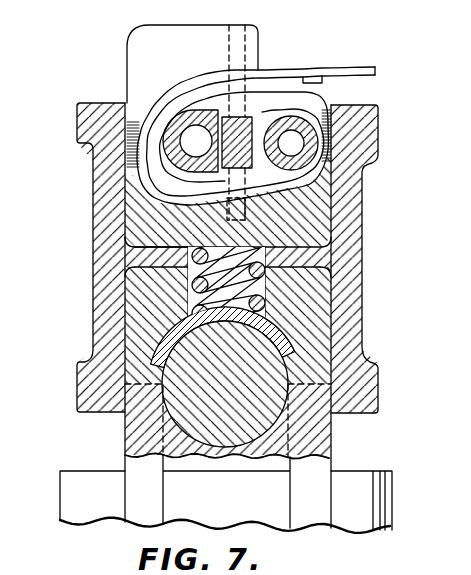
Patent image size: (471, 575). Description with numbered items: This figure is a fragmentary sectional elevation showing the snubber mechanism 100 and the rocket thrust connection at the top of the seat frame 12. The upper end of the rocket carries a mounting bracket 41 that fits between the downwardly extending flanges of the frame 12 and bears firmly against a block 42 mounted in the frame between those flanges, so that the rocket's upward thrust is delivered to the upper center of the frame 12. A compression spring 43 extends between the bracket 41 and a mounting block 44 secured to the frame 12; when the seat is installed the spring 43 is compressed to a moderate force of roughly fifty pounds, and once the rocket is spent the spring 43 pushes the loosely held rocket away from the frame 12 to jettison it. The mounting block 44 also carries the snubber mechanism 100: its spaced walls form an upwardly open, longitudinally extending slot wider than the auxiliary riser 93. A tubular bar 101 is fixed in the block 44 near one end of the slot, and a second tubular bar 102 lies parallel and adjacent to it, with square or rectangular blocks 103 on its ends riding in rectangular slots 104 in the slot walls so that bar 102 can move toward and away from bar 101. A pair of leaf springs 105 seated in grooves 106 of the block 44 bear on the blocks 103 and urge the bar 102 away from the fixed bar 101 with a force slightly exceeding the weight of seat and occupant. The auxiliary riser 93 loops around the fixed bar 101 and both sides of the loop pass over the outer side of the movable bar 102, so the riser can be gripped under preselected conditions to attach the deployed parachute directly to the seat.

The U-shaped frame 12 is at (86, 140).
The mounting bracket 41 is at (55, 494).
The block 42 is at (133, 331).
The compression spring 43 is at (268, 270).
The mounting block 44 is at (310, 211).
The auxiliary riser 93 is at (338, 68).
The snubber mechanism 100 is at (122, 76).
The tubular bar 101 is at (333, 105).
The second tubular bar 102 is at (170, 154).
The blocks 103 is at (191, 99).
The rectangular slots 104 is at (220, 172).
The leaf springs 105 is at (243, 184).
The grooves 106 is at (237, 24).